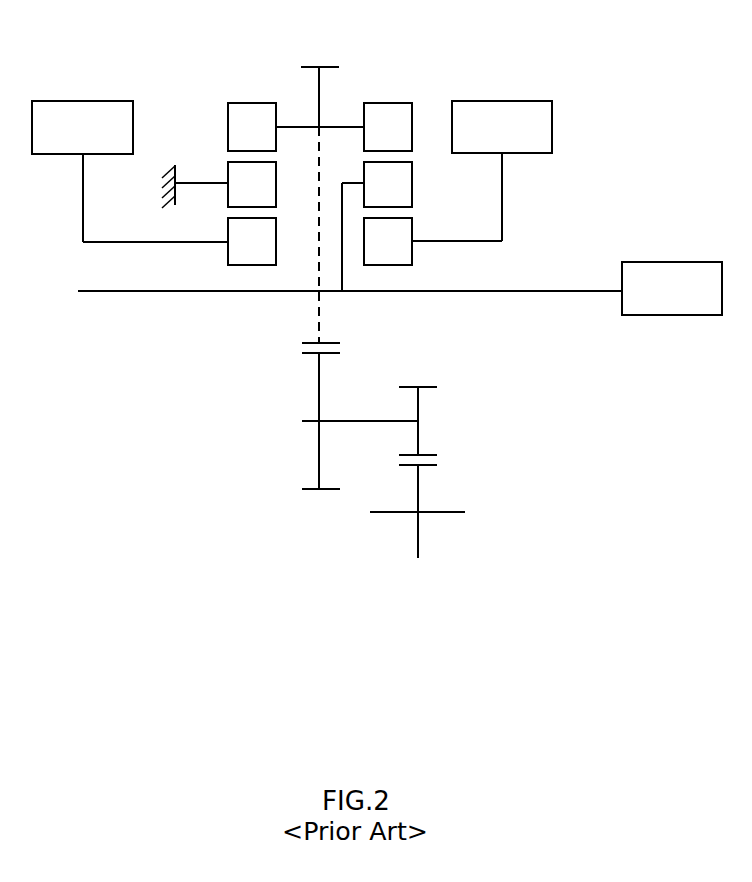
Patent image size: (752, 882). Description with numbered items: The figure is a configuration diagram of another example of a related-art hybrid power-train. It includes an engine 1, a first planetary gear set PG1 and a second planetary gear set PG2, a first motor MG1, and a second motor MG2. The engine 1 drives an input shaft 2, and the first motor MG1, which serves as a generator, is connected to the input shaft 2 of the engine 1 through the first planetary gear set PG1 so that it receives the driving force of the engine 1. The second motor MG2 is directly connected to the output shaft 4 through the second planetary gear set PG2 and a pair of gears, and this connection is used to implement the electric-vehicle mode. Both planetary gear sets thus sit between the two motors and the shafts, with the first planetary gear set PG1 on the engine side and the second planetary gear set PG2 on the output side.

The engine 1 is at (672, 262).
The input shaft 2 is at (150, 291).
The output shaft 4 is at (380, 514).
The first motor MG1 is at (500, 101).
The second motor MG2 is at (83, 101).
The first planetary gear set PG1 is at (388, 266).
The second planetary gear set PG2 is at (251, 266).